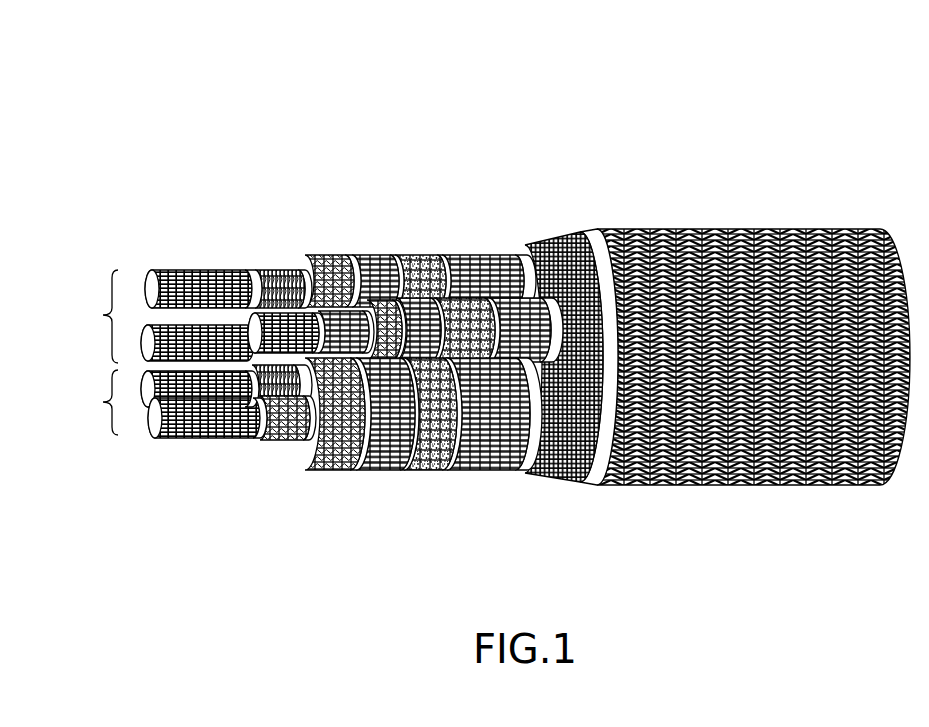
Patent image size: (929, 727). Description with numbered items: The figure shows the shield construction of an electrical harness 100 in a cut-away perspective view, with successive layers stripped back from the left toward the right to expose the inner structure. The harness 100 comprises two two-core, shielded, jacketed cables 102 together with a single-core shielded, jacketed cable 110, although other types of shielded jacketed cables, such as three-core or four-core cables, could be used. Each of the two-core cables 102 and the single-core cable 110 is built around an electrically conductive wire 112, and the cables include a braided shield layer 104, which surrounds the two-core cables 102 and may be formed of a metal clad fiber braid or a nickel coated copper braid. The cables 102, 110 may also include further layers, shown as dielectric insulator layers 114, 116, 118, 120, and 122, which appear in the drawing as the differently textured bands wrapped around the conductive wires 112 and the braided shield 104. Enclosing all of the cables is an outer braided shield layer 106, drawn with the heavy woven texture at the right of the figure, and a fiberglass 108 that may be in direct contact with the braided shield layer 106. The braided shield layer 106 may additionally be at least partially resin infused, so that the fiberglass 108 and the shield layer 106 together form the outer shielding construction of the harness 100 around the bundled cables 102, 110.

The harness 100 is at (606, 110).
The two-core shielded jacketed cable 102 is at (103, 402).
The braided shield layer 104 is at (318, 258).
The braided shield layer 106 is at (697, 487).
The fiberglass 108 is at (557, 477).
The single-core shielded jacketed cable 110 is at (505, 343).
The electrically conductive wire 112 is at (177, 333).
The dielectric insulator layer 114 is at (470, 255).
The dielectric insulator layer 116 is at (410, 255).
The dielectric insulator layer 118 is at (372, 467).
The dielectric insulator layer 120 is at (270, 445).
The dielectric insulator layer 122 is at (252, 268).